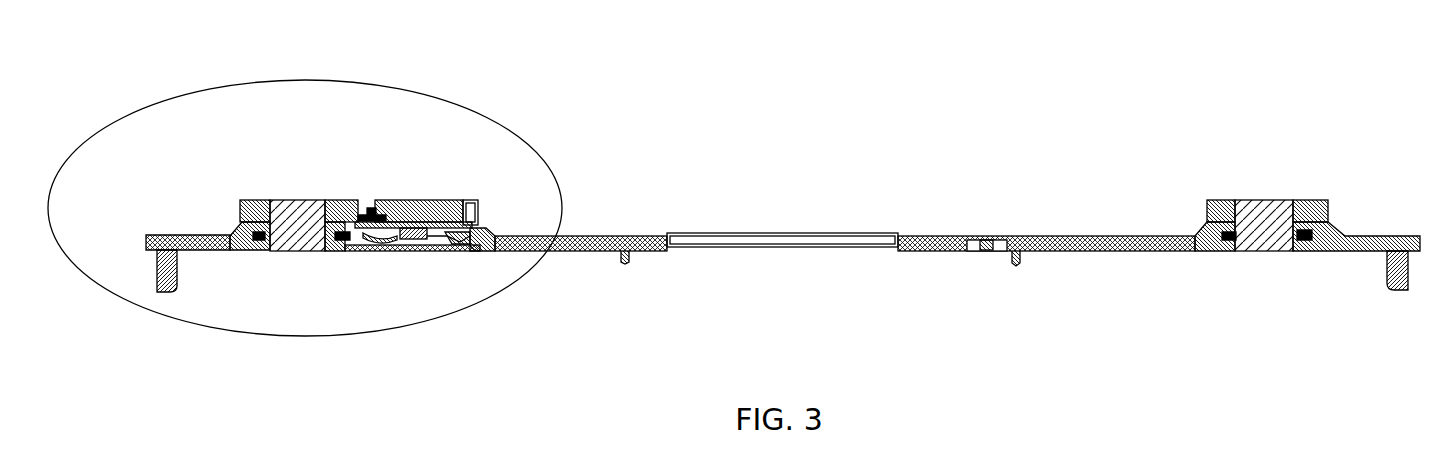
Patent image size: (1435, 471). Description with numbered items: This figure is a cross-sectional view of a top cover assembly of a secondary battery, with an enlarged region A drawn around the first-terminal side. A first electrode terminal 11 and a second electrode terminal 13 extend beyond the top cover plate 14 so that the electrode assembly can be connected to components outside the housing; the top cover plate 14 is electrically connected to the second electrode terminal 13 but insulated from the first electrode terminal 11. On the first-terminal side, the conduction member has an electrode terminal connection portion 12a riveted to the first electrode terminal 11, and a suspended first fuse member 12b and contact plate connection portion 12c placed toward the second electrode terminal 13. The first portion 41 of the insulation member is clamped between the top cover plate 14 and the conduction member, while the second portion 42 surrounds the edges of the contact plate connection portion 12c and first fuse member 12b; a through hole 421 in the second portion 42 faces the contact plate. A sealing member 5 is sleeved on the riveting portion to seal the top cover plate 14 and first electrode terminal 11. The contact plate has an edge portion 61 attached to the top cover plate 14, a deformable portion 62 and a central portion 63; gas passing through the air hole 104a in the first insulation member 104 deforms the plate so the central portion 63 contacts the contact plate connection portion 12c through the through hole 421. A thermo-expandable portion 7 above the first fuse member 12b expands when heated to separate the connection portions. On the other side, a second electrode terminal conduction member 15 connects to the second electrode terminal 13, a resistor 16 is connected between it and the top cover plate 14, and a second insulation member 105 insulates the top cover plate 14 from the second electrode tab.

The enlarged region A is at (365, 82).
The sealing member 5 is at (262, 241).
The thermo-expandable portion 7 is at (364, 209).
The first electrode terminal 11 is at (303, 208).
The electrode terminal connection portion 12a is at (257, 200).
The first fuse member 12b is at (375, 200).
The contact plate connection portion 12c is at (430, 199).
The second electrode terminal 13 is at (1267, 208).
The top cover plate 14 is at (620, 232).
The second electrode terminal conduction member 15 is at (1222, 200).
The resistor 16 is at (1206, 216).
The first portion 41 is at (237, 221).
The second portion 42 is at (384, 205).
The through hole 421 is at (458, 200).
The edge portion 61 is at (473, 251).
The deformable portion 62 is at (382, 236).
The central portion 63 is at (431, 239).
The first insulation member 104 is at (178, 274).
The air hole 104a is at (412, 251).
The second insulation member 105 is at (1388, 278).